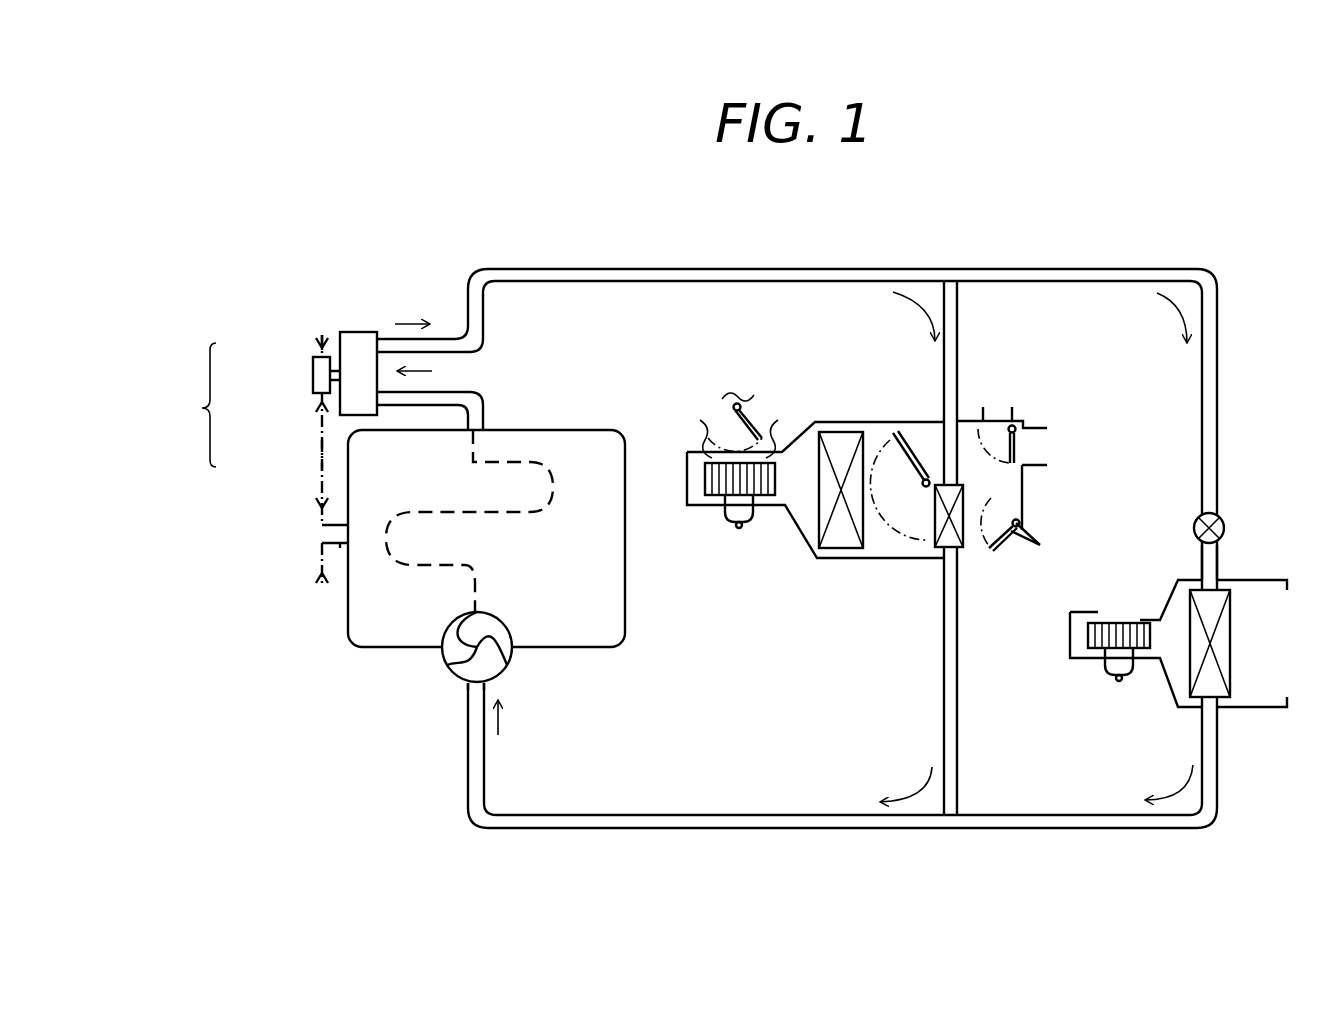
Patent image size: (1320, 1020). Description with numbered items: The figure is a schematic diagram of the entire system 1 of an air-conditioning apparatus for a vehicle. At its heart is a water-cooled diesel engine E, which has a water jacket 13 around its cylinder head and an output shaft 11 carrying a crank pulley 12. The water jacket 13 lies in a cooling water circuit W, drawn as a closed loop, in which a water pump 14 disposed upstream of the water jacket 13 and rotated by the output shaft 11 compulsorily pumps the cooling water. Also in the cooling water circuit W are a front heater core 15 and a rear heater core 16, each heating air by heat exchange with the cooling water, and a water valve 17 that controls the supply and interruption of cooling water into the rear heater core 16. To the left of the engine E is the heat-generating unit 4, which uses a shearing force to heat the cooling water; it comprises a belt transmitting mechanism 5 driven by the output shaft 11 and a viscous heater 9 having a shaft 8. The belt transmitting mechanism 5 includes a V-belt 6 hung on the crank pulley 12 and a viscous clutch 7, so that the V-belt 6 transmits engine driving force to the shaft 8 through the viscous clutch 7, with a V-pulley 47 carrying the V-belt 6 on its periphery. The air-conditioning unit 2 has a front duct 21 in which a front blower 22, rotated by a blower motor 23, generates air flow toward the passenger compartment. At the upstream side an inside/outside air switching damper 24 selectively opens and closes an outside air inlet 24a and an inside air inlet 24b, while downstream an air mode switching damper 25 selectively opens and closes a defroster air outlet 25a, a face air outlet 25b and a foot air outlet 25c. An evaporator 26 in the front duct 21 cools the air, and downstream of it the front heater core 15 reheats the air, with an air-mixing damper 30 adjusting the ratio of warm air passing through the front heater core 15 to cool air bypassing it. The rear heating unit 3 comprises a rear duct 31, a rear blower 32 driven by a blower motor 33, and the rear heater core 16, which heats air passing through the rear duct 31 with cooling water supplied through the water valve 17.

The entire system 1 is at (384, 250).
The air-conditioning unit 2 is at (730, 385).
The rear heating unit 3 is at (1264, 566).
The heat-generating unit 4 is at (315, 323).
The belt transmitting mechanism 5 is at (195, 405).
The V-belt 6 is at (322, 457).
The viscous clutch 7 is at (313, 367).
The shaft 8 is at (334, 366).
The viscous heater 9 is at (357, 345).
The output shaft 11 is at (340, 545).
The crank pulley 12 is at (322, 530).
The water jacket 13 is at (530, 430).
The water pump 14 is at (456, 670).
The front heater core 15 is at (962, 548).
The rear heater core 16 is at (1200, 697).
The water valve 17 is at (1222, 520).
The front duct 21 is at (815, 558).
The front blower 22 is at (705, 478).
The blower motor 23 is at (725, 522).
The inside/outside air switching damper 24 is at (762, 402).
The outside air inlet 24a is at (708, 420).
The inside air inlet 24b is at (774, 420).
The air mode switching damper 25 is at (1030, 440).
The defroster air outlet 25a is at (995, 420).
The face air outlet 25b is at (1042, 458).
The foot air outlet 25c is at (1022, 557).
The evaporator 26 is at (840, 548).
The air-mixing damper 30 is at (925, 480).
The rear duct 31 is at (1186, 580).
The rear blower 32 is at (1088, 635).
The blower motor 33 is at (1112, 673).
The V-pulley 47 is at (323, 340).
The cooling water circuit W is at (525, 270).
The engine E is at (583, 430).